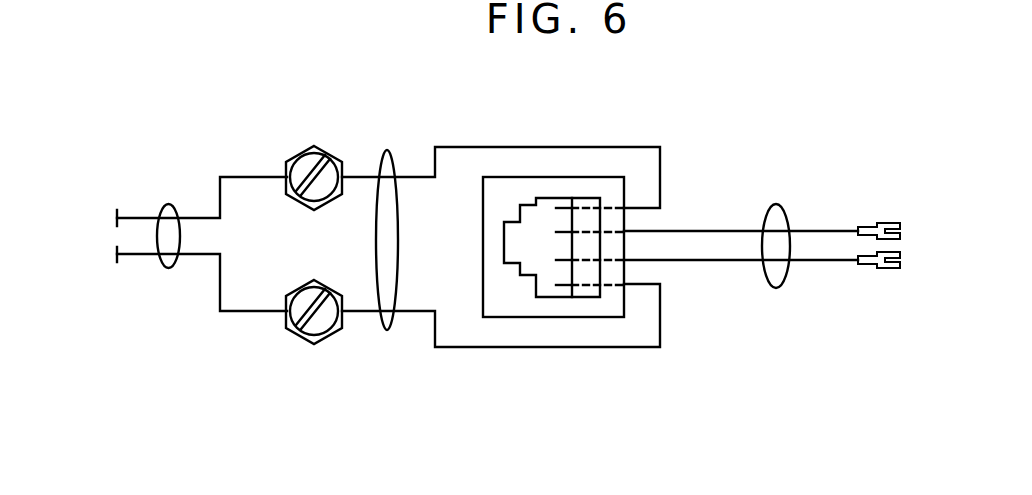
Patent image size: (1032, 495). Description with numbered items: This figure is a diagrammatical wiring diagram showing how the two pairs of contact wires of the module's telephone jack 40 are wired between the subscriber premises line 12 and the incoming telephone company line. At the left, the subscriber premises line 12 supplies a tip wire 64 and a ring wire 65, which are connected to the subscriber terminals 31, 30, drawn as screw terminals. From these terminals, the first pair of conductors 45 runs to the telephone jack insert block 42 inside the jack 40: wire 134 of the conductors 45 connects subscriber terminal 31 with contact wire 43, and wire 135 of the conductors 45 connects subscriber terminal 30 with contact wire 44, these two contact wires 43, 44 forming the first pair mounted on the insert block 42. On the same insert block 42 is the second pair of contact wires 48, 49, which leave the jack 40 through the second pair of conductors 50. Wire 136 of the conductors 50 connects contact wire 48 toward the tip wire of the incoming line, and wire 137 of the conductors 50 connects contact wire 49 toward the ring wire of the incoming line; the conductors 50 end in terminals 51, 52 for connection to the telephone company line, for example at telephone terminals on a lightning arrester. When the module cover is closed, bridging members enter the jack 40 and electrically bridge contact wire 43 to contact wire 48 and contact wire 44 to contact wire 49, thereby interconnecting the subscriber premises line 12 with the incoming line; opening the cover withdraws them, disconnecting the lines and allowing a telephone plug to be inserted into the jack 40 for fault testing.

The subscriber premises line 12 is at (168, 205).
The subscriber terminal 30 is at (318, 343).
The subscriber terminal 31 is at (300, 148).
The telephone jack 40 is at (517, 243).
The telephone jack insert block 42 is at (588, 197).
The contact wire 43 is at (562, 203).
The contact wire 44 is at (565, 287).
The pair of conductors 45 is at (385, 150).
The contact wire 48 is at (558, 233).
The contact wire 49 is at (563, 262).
The pair of conductors 50 is at (778, 206).
The terminal 51 is at (887, 226).
The terminal 52 is at (888, 270).
The tip wire 64 is at (247, 177).
The ring wire 65 is at (253, 312).
The wire 134 is at (417, 172).
The wire 135 is at (372, 312).
The wire 136 is at (723, 230).
The wire 137 is at (693, 262).